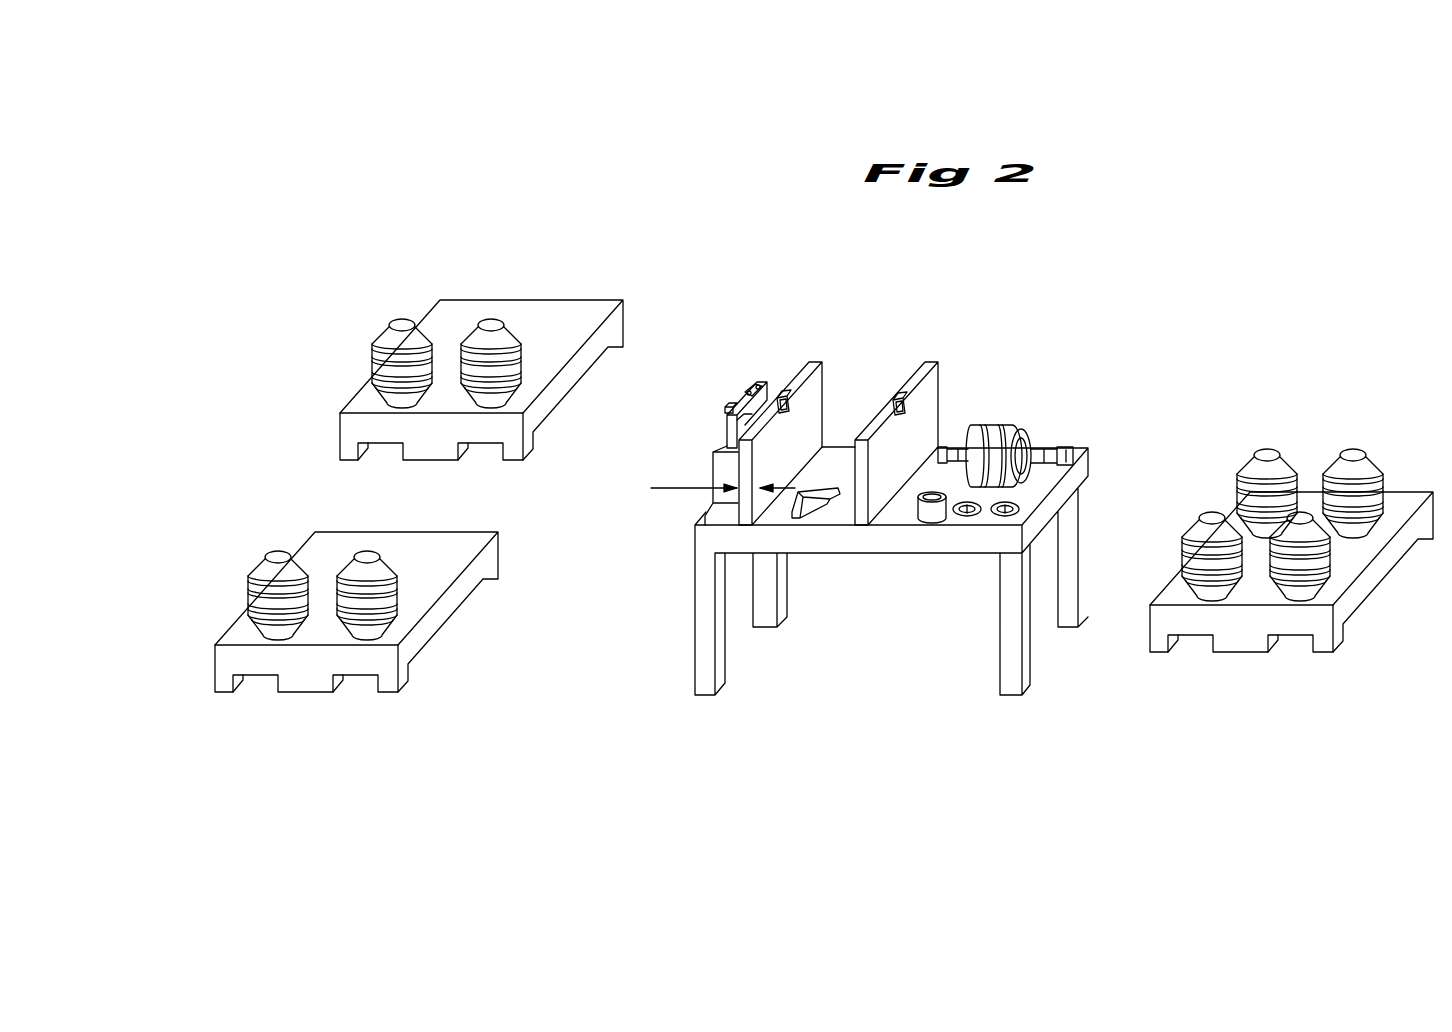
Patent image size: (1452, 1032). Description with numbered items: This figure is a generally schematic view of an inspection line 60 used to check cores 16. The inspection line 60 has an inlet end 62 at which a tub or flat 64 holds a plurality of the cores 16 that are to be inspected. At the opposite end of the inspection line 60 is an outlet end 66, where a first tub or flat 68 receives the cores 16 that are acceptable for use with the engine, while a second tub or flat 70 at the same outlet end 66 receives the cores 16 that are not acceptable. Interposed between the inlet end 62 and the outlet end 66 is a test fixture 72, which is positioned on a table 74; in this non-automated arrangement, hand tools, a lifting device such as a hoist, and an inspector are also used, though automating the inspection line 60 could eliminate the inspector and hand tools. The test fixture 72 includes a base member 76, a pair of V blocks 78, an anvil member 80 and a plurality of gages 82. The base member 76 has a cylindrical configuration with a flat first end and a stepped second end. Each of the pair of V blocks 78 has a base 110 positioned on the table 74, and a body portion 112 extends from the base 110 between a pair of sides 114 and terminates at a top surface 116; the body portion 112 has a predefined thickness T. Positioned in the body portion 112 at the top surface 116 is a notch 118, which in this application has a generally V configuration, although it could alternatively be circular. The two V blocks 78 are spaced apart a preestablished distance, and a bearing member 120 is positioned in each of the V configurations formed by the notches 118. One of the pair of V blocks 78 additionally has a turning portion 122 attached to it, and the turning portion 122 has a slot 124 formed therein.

The core 16 is at (489, 320).
The inspection line 60 is at (1122, 282).
The inlet end 62 is at (1252, 721).
The tub or flat 64 is at (1340, 614).
The outlet end 66 is at (319, 826).
The first tub or flat 68 is at (215, 663).
The second tub or flat 70 is at (340, 432).
The test fixture 72 is at (808, 272).
The table 74 is at (1005, 632).
The base member 76 is at (920, 505).
The pair of V blocks 78 is at (813, 364).
The anvil member 80 is at (985, 425).
The gages 82 is at (812, 510).
The base 110 is at (745, 528).
The body portion 112 is at (772, 437).
The pair of sides 114 is at (745, 470).
The top surface 116 is at (738, 420).
The notch 118 is at (800, 398).
The bearing member 120 is at (782, 393).
The turning portion 122 is at (744, 390).
The slot 124 is at (731, 404).